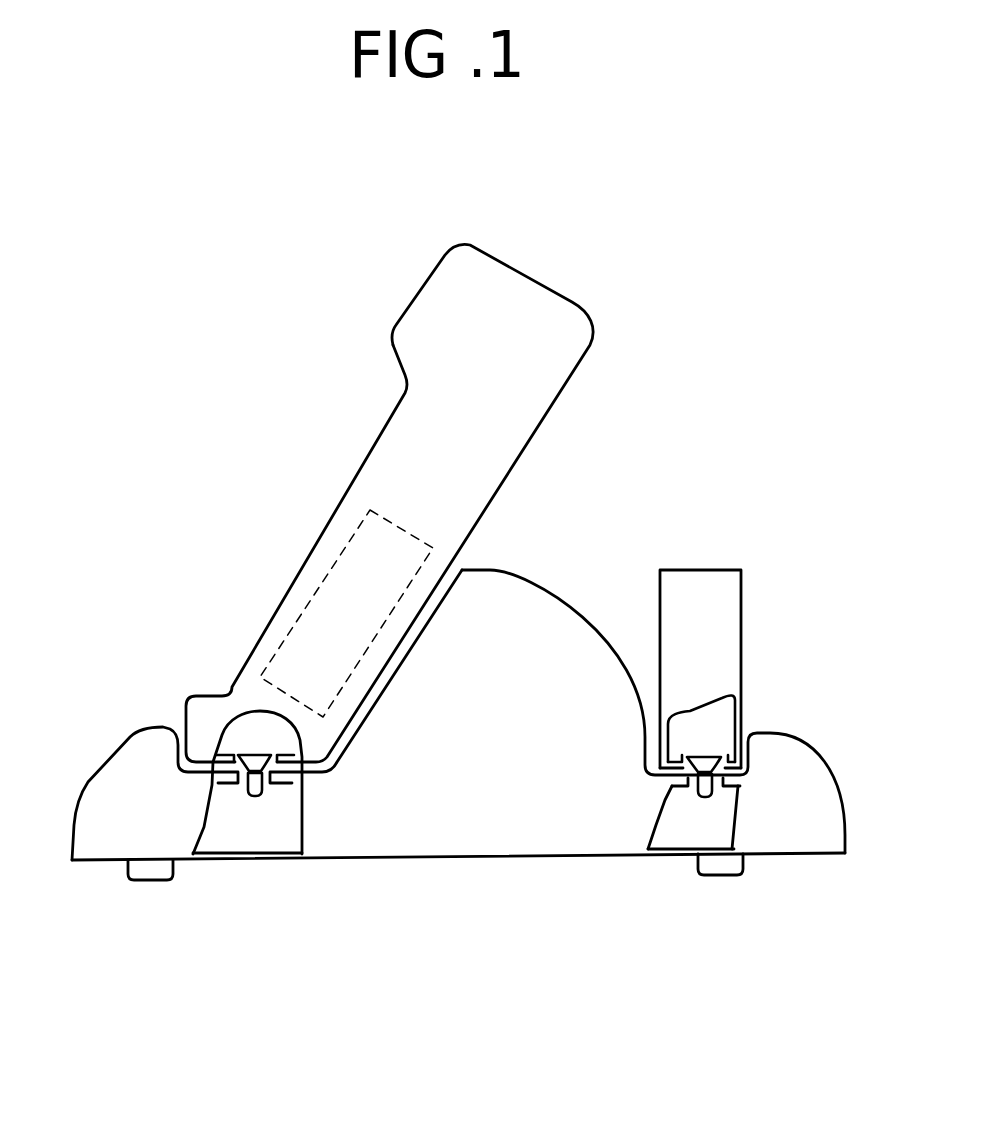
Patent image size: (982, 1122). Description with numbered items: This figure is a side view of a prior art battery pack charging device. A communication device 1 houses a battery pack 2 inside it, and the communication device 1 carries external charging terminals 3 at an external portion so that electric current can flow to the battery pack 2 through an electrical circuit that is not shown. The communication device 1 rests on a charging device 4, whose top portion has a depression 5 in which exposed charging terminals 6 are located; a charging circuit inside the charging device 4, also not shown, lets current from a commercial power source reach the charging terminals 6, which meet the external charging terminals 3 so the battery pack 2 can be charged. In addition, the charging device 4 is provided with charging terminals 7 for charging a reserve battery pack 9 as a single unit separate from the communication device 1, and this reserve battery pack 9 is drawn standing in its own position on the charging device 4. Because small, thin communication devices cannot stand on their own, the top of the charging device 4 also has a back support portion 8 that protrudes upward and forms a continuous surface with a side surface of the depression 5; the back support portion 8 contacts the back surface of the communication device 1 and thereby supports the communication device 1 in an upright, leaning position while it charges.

The communication device 1 is at (413, 298).
The battery pack 2 is at (385, 512).
The external charging terminals 3 is at (247, 755).
The charging device 4 is at (473, 857).
The depression 5 is at (179, 730).
The charging terminals 6 is at (257, 797).
The charging terminals 7 is at (707, 797).
The back support portion 8 is at (457, 567).
The reserve battery pack 9 is at (741, 658).